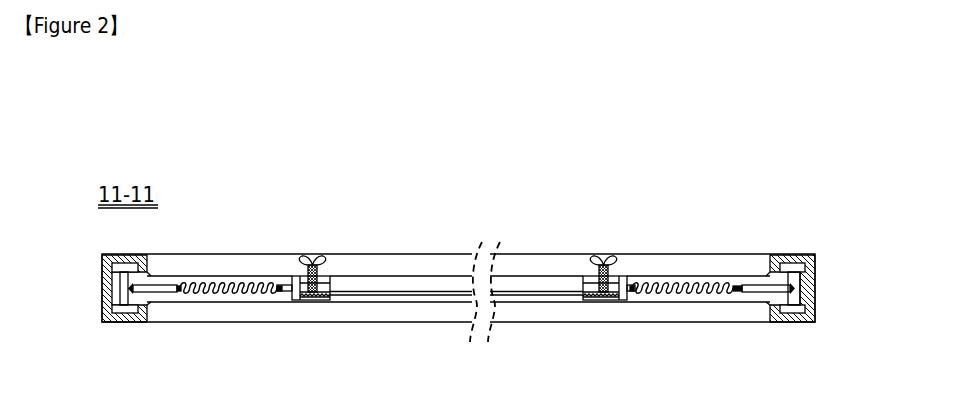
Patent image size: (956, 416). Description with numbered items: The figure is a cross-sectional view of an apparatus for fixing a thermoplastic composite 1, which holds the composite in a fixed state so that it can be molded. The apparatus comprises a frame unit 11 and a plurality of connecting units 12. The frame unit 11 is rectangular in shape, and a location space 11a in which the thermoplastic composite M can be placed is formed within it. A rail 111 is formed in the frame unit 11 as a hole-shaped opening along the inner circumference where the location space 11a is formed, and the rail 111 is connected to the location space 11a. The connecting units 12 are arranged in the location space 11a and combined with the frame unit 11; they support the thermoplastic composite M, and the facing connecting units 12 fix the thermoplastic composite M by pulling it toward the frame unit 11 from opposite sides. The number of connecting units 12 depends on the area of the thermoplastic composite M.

The apparatus for fixing a thermoplastic composite 1 is at (448, 174).
The frame unit 11 is at (243, 246).
The location space 11a is at (682, 269).
The rail 111 is at (800, 281).
The connecting unit 12 is at (229, 308).
The thermoplastic composite M is at (375, 291).